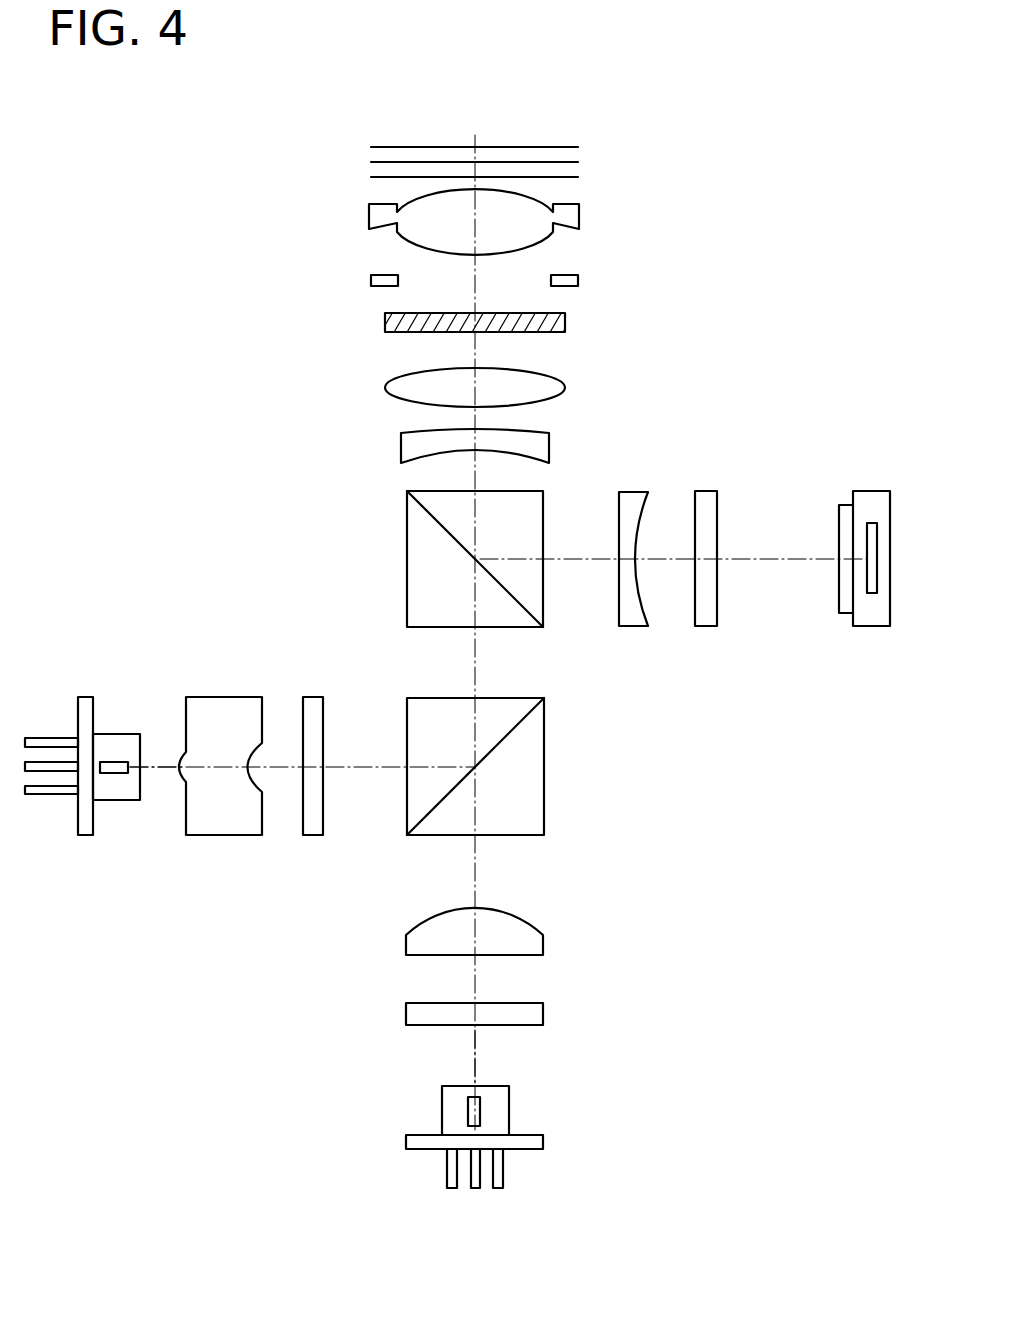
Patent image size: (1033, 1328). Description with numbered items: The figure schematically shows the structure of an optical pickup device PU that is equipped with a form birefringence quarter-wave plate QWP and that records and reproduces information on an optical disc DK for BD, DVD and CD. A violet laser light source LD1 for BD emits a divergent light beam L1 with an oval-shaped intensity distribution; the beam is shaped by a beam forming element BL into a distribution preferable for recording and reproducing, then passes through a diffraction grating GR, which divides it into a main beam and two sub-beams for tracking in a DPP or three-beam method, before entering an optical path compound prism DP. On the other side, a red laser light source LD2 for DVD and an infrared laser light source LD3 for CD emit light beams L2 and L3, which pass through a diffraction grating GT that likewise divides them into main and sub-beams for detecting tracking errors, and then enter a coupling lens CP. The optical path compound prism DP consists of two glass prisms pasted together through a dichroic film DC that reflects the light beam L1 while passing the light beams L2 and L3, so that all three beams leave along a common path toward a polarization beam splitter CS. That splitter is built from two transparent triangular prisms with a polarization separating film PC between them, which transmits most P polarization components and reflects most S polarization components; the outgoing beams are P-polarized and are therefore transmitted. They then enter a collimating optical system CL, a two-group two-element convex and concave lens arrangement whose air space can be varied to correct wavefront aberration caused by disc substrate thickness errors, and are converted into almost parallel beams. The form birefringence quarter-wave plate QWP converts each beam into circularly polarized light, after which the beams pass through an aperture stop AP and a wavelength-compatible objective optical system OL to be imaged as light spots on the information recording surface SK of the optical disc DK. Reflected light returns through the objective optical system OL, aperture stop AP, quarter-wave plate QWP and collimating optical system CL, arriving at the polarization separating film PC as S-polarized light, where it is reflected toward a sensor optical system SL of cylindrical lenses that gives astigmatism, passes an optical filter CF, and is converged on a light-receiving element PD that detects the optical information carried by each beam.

The optical pickup device PU is at (160, 375).
The optical disc DK is at (360, 146).
The information recording surface SK is at (578, 162).
The objective optical system OL is at (579, 217).
The aperture stop AP is at (578, 280).
The form birefringence quarter-wave plate QWP is at (565, 322).
The collimating optical system CL is at (582, 367).
The polarization beam splitter CS is at (407, 522).
The polarization separating film PC is at (453, 538).
The sensor optical system SL is at (632, 626).
The optical filter CF is at (707, 491).
The light-receiving element PD is at (872, 626).
The violet laser light source LD1 is at (115, 778).
The light beam L1 is at (160, 757).
The beam forming element BL is at (220, 697).
The diffraction grating GR is at (313, 697).
The optical path compound prism DP is at (544, 765).
The dichroic film DC is at (523, 720).
The coupling lens CP is at (543, 933).
The diffraction grating GT is at (543, 1012).
The light beam L2 is at (373, 1058).
The light beam L3 is at (475, 1060).
The red laser light source LD2 is at (480, 1110).
The infrared laser light source LD3 is at (465, 1110).